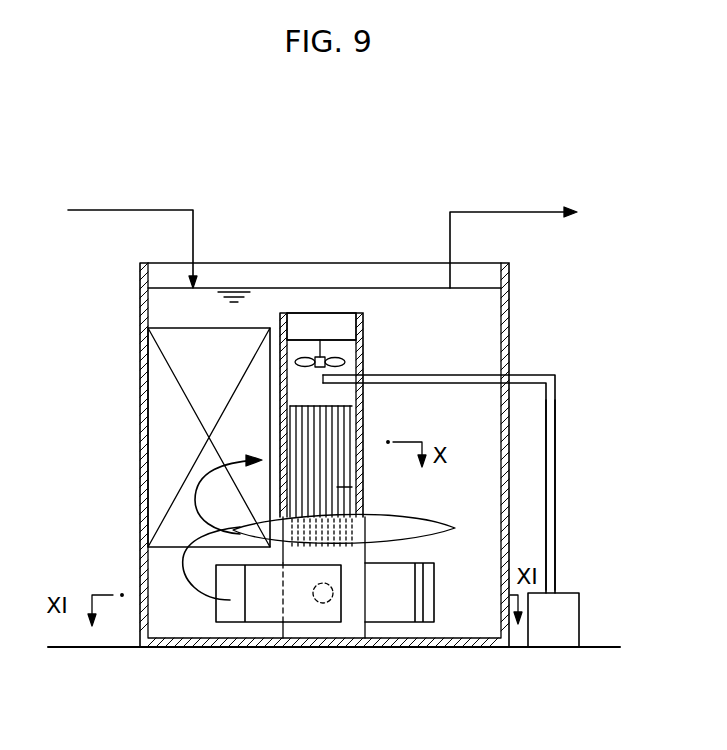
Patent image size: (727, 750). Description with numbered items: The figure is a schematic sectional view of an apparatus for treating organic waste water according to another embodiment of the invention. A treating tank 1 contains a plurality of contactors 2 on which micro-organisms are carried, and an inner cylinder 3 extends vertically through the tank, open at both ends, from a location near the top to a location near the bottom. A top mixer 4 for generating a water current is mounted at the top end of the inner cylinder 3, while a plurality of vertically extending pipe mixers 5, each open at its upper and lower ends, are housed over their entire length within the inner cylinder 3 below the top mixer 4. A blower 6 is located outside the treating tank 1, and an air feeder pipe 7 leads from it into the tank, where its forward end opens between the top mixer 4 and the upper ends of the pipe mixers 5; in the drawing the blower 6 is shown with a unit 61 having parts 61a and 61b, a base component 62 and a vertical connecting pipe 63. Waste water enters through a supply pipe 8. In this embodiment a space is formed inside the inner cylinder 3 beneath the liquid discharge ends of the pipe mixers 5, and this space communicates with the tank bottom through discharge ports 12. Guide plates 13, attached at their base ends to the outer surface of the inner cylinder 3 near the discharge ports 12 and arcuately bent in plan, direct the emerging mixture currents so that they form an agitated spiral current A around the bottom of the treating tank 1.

The treating tank 1 is at (140, 320).
The contactors 2 is at (150, 412).
The inner cylinder 3 is at (366, 301).
The top mixer 4 is at (362, 418).
The pipe mixers 5 is at (337, 487).
The blower 6 is at (572, 415).
The air feeder pipe 7 is at (120, 210).
The supply pipe 8 is at (497, 212).
The discharge ports 12 is at (322, 603).
The guide plates 13 is at (268, 610).
The fan unit 61 is at (289, 312).
The fan motor 61a is at (340, 330).
The fan blade 61b is at (348, 362).
The pump 62 is at (564, 620).
The pipe 63 is at (557, 500).
The agitated spiral current A is at (438, 520).